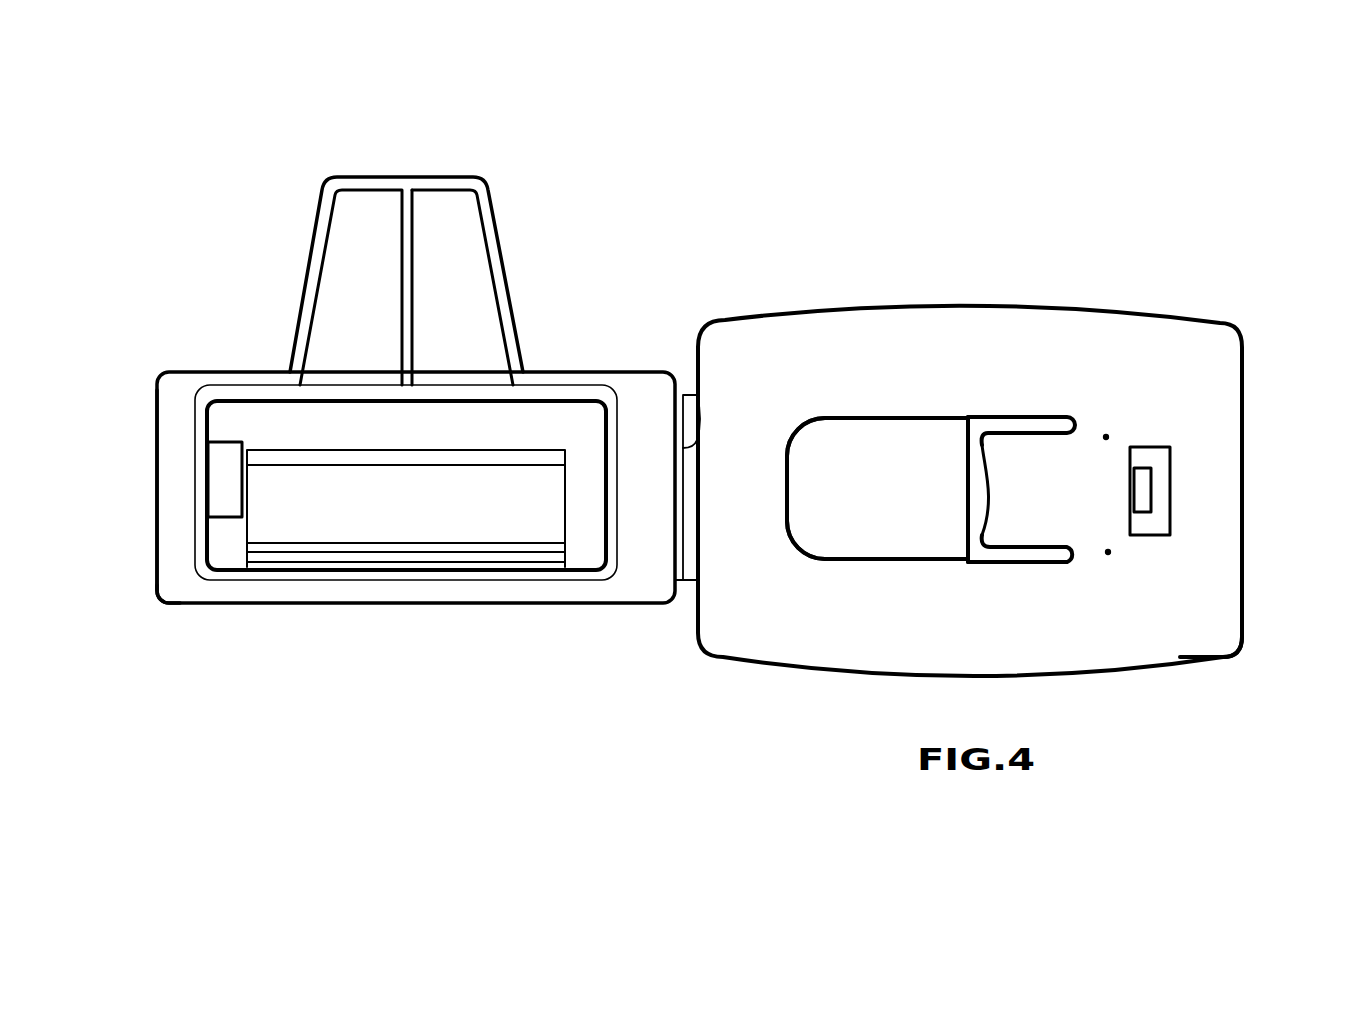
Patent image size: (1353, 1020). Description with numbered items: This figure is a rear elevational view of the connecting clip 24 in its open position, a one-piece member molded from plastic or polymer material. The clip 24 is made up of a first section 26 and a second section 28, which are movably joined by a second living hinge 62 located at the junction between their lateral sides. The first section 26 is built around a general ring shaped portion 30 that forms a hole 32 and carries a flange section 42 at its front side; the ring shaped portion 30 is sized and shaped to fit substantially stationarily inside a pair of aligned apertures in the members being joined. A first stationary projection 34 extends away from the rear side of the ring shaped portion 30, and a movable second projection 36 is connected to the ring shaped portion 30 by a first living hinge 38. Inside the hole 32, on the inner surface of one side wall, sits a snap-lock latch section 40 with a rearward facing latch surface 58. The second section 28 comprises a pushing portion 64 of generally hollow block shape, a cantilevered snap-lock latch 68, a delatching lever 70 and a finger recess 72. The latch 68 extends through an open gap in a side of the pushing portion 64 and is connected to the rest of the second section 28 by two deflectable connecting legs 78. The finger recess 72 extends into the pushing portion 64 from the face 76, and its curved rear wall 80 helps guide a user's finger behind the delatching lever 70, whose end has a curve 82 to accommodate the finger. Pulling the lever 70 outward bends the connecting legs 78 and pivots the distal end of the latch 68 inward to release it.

The connecting clip 24 is at (1102, 146).
The first section 26 is at (168, 371).
The second section 28 is at (1223, 328).
The general ring shaped portion 30 is at (172, 530).
The hole 32 is at (552, 425).
The first stationary projection 34 is at (313, 245).
The second projection 36 is at (407, 513).
The first living hinge 38 is at (287, 548).
The snap-lock latch section 40 is at (220, 477).
The flange section 42 is at (157, 588).
The latch surface 58 is at (220, 493).
The second living hinge 62 is at (697, 395).
The pushing portion 64 is at (918, 462).
The cantilevered snap-lock latch 68 is at (1152, 490).
The delatching lever 70 is at (1020, 507).
The finger recess 72 is at (878, 462).
The face 76 is at (1185, 628).
The deflectable connecting legs 78 is at (1106, 437).
The wall 80 is at (848, 525).
The curve 82 is at (992, 502).